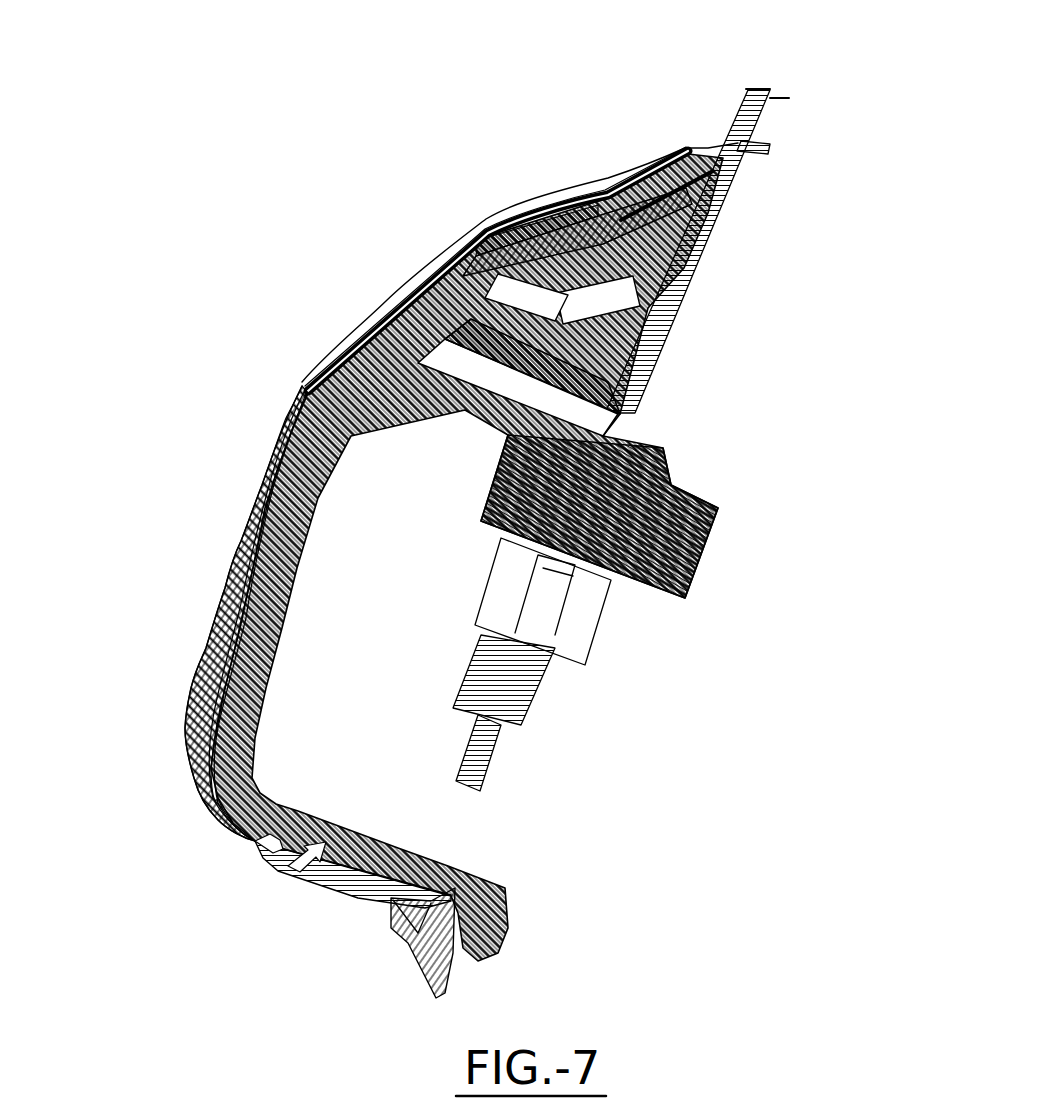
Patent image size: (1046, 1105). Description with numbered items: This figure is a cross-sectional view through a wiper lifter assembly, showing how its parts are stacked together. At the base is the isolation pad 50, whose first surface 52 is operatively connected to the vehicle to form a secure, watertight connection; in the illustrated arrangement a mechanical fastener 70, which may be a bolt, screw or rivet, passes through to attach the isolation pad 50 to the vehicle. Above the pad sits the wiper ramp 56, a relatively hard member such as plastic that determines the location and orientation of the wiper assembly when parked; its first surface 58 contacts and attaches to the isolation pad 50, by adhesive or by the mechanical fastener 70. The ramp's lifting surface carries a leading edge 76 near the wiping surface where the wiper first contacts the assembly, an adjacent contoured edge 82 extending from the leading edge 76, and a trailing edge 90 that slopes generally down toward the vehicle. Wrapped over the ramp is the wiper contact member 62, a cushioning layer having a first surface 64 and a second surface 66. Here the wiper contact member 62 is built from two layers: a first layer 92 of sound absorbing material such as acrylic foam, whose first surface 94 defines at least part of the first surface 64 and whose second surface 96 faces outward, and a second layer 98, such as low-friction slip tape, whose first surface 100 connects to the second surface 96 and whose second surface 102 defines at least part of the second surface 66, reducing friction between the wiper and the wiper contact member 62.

The isolation pad 50 is at (736, 192).
The first surface 52 is at (718, 205).
The wiper ramp 56 is at (270, 613).
The first surface 58 is at (590, 355).
The wiper contact member 62 is at (142, 760).
The first surface 64 is at (273, 497).
The second surface 66 is at (193, 600).
The mechanical fastener 70 is at (578, 622).
The leading edge 76 is at (650, 205).
The contoured edge 82 is at (520, 238).
The trailing edge 90 is at (243, 772).
The first layer 92 is at (323, 347).
The first surface 94 is at (277, 437).
The second surface 96 is at (390, 287).
The second layer 98 is at (165, 701).
The first surface 100 is at (395, 288).
The second surface 102 is at (217, 600).